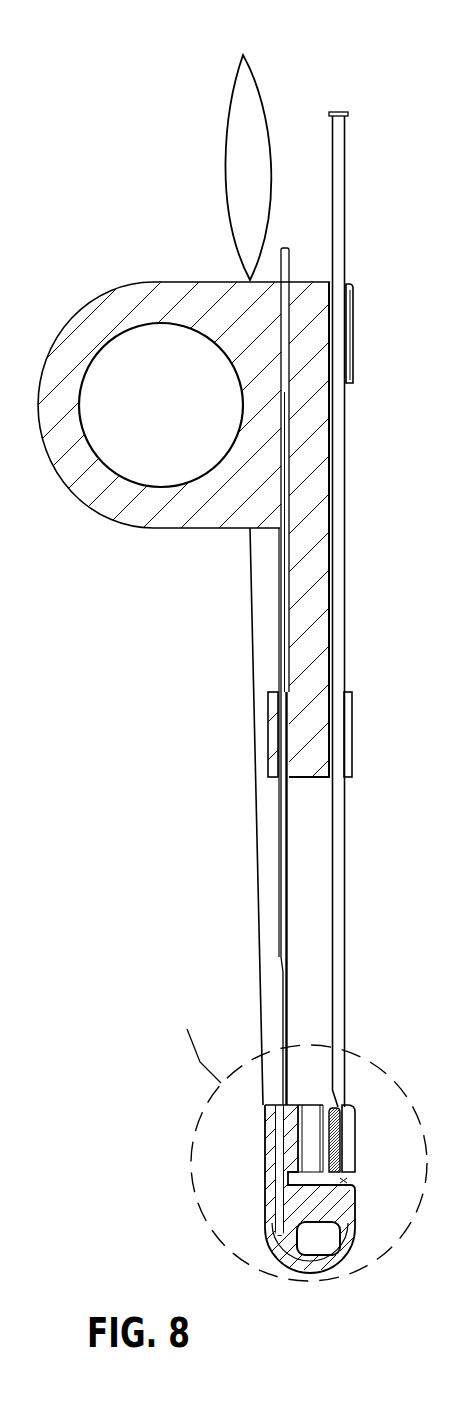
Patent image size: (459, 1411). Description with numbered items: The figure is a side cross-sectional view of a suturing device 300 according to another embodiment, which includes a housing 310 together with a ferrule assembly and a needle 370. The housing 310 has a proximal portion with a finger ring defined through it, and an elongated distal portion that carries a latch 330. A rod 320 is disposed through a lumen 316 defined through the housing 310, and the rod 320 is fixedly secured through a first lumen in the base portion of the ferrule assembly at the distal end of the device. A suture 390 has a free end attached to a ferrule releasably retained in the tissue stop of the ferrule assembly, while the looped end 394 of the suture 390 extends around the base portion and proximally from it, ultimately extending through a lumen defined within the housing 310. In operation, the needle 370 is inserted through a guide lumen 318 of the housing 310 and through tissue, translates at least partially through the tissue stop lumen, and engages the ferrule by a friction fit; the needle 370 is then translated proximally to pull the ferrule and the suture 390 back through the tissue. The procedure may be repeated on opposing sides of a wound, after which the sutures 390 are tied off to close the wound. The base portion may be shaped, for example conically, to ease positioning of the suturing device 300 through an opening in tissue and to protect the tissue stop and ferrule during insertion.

The suturing device 300 is at (92, 219).
The housing 310 is at (65, 478).
The lumen 316 is at (274, 322).
The guide lumen 318 is at (362, 311).
The rod 320 is at (279, 920).
The latch 330 is at (268, 732).
The needle 370 is at (345, 846).
The suture 390 is at (255, 818).
The looped end 394 is at (223, 125).